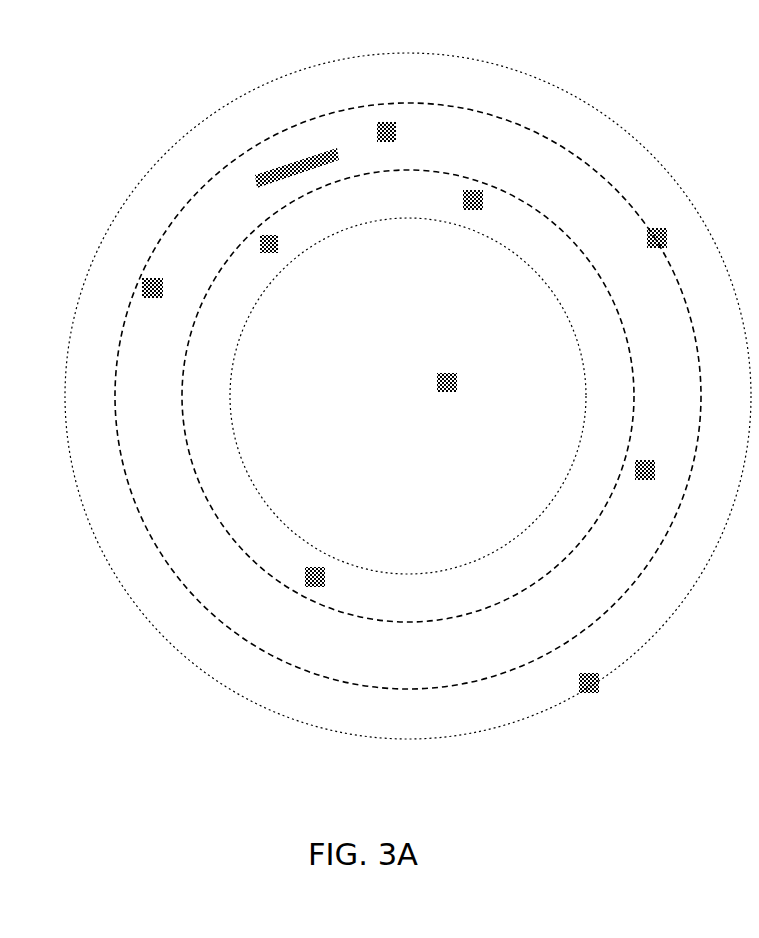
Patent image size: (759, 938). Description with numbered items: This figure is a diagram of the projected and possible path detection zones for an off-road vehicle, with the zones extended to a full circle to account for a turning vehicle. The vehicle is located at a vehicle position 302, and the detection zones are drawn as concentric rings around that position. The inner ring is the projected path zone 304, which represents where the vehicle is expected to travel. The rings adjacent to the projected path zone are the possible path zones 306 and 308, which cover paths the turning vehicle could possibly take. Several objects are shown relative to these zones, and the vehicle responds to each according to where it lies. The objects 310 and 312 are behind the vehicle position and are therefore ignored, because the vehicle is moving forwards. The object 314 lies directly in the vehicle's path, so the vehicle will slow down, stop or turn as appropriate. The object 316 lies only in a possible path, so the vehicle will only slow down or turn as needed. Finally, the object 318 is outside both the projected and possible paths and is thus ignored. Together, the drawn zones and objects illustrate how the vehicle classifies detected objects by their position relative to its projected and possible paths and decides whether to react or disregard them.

The vehicle position 302 is at (295, 167).
The projected path zone 304 is at (222, 205).
The possible path zone 306 is at (90, 402).
The possible path zone 308 is at (221, 330).
The object 310 is at (475, 190).
The object 312 is at (388, 122).
The object 314 is at (150, 280).
The object 316 is at (277, 255).
The object 318 is at (452, 393).